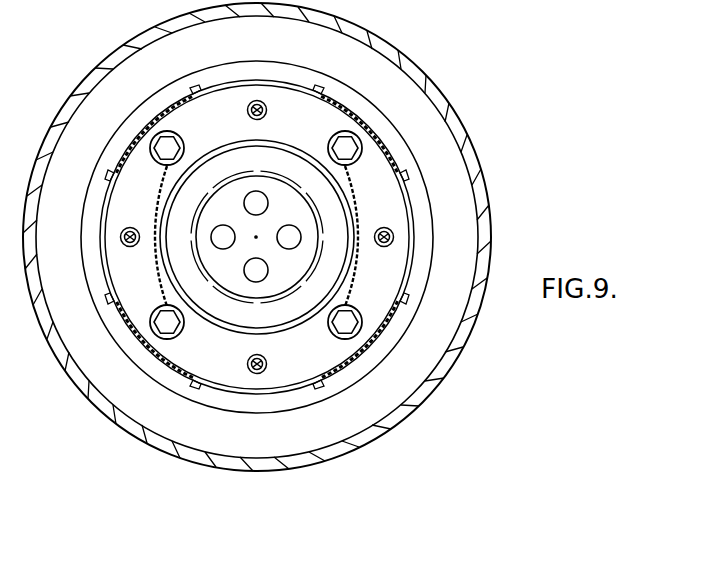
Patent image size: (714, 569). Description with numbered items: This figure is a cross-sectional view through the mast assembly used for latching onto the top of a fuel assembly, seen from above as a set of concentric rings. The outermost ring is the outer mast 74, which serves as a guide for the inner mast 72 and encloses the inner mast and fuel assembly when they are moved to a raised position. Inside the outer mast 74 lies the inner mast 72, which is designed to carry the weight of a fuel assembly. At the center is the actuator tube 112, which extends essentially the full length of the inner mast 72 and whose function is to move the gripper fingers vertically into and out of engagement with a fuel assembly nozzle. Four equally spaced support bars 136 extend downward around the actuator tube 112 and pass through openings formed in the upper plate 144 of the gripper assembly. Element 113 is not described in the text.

The outer mast 74 is at (87, 82).
The upper plate 144 is at (189, 72).
The inner mast 72 is at (233, 81).
The support bars 136 is at (261, 100).
The actuator tube 112 is at (247, 171).
The retaining chain 113 is at (173, 196).